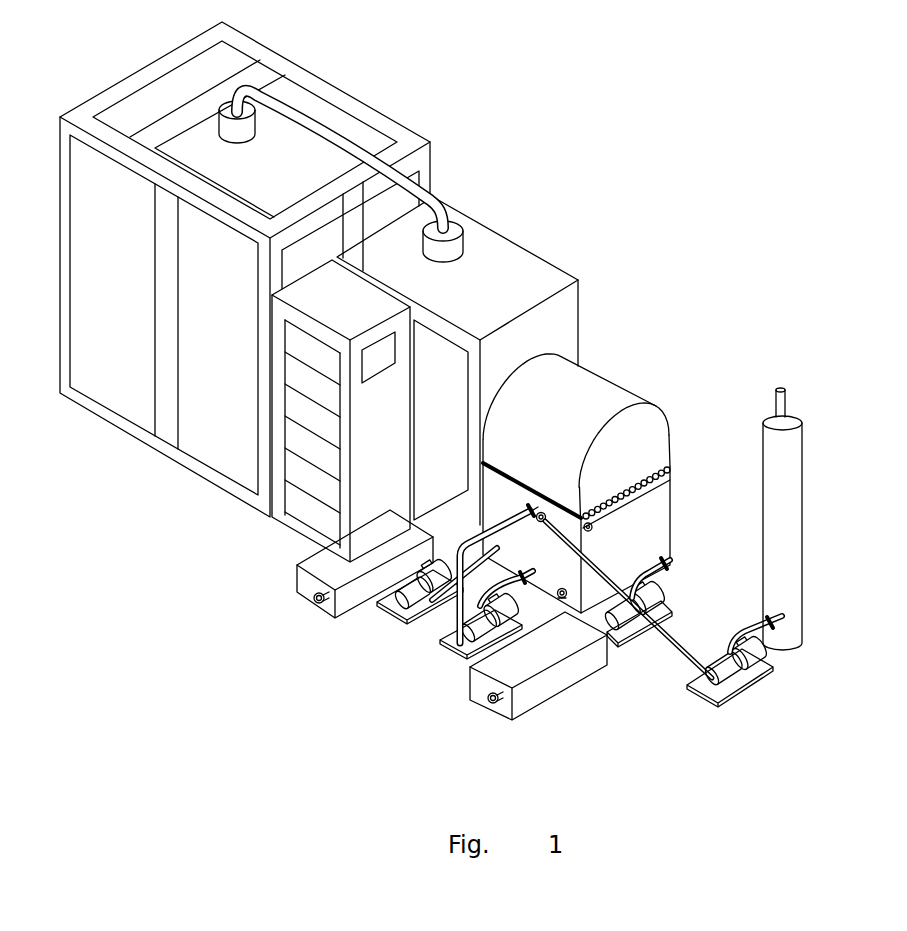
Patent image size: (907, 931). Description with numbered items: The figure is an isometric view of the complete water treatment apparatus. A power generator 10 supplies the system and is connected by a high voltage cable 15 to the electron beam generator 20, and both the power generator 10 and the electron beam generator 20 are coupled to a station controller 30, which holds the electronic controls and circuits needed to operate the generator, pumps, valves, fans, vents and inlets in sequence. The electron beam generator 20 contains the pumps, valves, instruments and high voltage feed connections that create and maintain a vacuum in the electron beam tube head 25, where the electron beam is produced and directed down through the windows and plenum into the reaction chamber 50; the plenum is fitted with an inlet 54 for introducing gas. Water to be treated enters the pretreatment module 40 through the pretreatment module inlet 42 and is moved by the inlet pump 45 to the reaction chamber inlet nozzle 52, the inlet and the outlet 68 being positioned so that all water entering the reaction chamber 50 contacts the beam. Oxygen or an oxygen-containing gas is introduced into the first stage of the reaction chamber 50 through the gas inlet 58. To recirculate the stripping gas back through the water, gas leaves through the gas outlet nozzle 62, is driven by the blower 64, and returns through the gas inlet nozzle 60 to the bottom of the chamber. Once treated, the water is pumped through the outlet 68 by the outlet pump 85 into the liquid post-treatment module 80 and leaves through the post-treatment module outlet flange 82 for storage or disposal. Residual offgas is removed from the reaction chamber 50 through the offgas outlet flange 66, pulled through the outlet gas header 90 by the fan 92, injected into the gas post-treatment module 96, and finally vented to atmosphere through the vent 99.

The power generator 10 is at (333, 88).
The high voltage cable 15 is at (363, 153).
The electron beam generator 20 is at (508, 240).
The electron beam tube head 25 is at (613, 386).
The station controller 30 is at (308, 413).
The pretreatment module 40 is at (468, 685).
The pretreatment module inlet 42 is at (493, 708).
The inlet pump 45 is at (660, 602).
The reaction chamber 50 is at (674, 503).
The reaction chamber inlet nozzle 52 is at (662, 597).
The inlet 54 is at (593, 527).
The gas inlet 58 is at (560, 588).
The gas inlet nozzle 60 is at (513, 572).
The gas outlet nozzle 62 is at (540, 470).
The blower 64 is at (457, 642).
The offgas outlet flange 66 is at (540, 512).
The outlet 68 is at (473, 545).
The liquid post-treatment module 80 is at (300, 593).
The post-treatment module outlet flange 82 is at (313, 600).
The outlet pump 85 is at (377, 612).
The outlet gas header 90 is at (670, 648).
The fan 92 is at (735, 705).
The gas post-treatment module 96 is at (803, 523).
The vent 99 is at (788, 398).